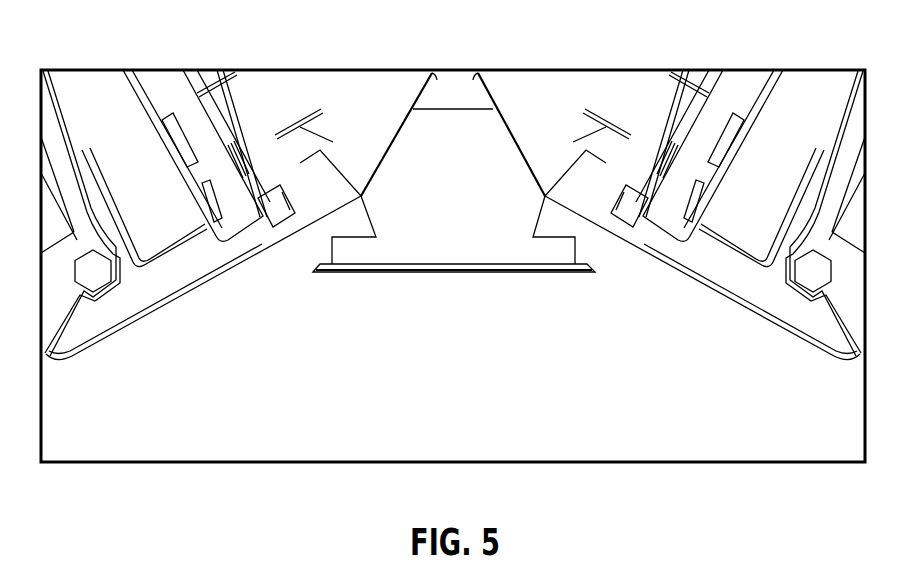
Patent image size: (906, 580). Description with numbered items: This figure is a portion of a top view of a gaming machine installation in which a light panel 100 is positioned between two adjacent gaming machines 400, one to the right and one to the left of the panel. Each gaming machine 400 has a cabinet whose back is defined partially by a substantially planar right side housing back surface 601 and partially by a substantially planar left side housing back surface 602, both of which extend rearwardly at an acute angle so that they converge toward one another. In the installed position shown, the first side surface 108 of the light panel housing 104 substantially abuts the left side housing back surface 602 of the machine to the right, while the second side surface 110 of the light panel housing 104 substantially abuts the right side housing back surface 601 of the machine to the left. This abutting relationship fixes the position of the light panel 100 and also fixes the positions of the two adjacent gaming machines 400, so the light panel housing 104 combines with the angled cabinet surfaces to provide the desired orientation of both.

The light panel 100 is at (454, 208).
The light panel housing 104 is at (478, 220).
The first side surface 108 is at (510, 125).
The second side surface 110 is at (404, 125).
The gaming machine 400 is at (214, 319).
The right side housing back surface 601 is at (430, 74).
The left side housing back surface 602 is at (480, 74).